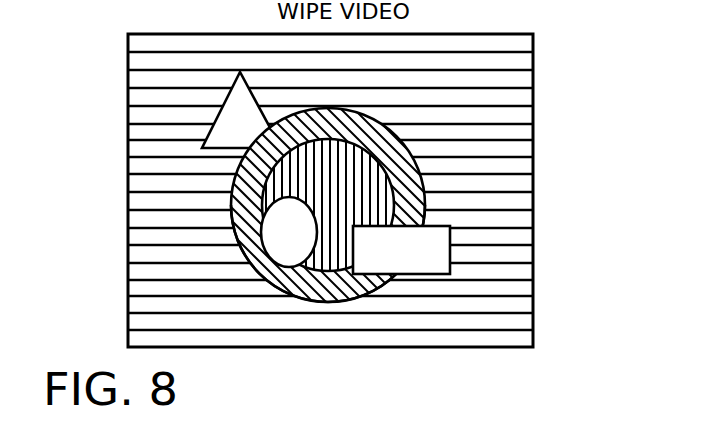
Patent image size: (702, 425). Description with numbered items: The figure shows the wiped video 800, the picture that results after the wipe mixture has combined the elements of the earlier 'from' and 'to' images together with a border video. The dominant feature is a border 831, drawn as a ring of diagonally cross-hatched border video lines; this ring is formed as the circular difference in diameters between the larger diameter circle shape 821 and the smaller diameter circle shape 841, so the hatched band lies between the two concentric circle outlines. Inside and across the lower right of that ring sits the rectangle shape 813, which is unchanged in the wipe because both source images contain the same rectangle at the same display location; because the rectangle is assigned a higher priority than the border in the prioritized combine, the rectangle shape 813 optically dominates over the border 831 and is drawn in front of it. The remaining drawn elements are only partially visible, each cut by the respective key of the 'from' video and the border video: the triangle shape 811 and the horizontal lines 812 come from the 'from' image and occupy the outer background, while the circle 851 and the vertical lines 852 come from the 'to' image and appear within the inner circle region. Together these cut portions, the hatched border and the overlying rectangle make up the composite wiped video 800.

The wiped video 800 is at (433, 34).
The horizontal lines 812 is at (498, 63).
The triangle shape 811 is at (228, 99).
The larger diameter circle shape 821 is at (405, 145).
The border 831 is at (253, 165).
The smaller diameter circle shape 841 is at (420, 176).
The rectangle shape 813 is at (440, 222).
The circle 851 is at (308, 293).
The vertical lines 852 is at (337, 297).